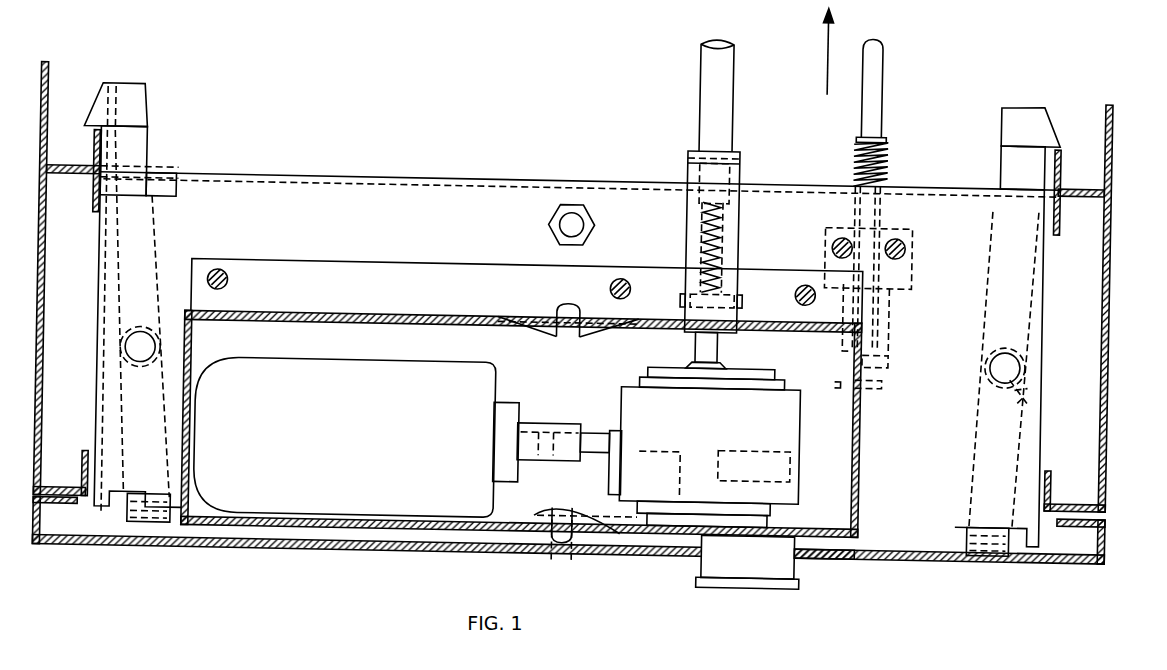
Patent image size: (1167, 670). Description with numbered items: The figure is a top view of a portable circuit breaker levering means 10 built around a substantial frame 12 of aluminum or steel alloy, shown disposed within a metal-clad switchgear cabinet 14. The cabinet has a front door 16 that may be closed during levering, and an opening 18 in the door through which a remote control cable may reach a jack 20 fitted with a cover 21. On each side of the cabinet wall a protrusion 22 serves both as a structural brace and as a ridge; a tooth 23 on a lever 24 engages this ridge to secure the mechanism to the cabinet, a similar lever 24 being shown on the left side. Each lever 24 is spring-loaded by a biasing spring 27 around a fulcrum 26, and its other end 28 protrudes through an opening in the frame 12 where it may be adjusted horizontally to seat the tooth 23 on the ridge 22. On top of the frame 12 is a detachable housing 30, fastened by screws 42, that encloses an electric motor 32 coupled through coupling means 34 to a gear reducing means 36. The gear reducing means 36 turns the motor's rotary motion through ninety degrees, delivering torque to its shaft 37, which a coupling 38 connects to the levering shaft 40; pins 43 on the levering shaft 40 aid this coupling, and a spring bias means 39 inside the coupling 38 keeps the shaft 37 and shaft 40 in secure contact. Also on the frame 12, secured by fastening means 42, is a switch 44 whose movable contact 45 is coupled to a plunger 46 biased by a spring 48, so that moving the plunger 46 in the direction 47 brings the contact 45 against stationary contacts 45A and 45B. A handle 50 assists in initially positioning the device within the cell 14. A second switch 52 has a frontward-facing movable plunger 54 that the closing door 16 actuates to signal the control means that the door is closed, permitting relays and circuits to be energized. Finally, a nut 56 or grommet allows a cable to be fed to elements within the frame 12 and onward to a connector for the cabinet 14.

The portable circuit breaker levering means 10 is at (606, 172).
The frame 12 is at (354, 179).
The metal-clad switchgear cabinet 14 is at (1109, 308).
The front door 16 is at (209, 553).
The opening 18 is at (809, 554).
The jack 20 is at (756, 538).
The cover 21 is at (795, 586).
The protrusion 22 is at (1057, 166).
The tooth 23 is at (1046, 141).
The lever 24 is at (143, 140).
The fulcrum 26 is at (1004, 344).
The biasing spring 27 is at (1027, 385).
The other end of lever 28 is at (999, 549).
The detachable housing 30 is at (466, 316).
The electric motor 32 is at (372, 365).
The coupling means 34 is at (578, 423).
The gear reducing means 36 is at (803, 441).
The shaft 37 is at (719, 248).
The coupling 38 is at (737, 218).
The spring bias means 39 is at (698, 254).
The levering shaft 40 is at (728, 84).
The screws 42 is at (226, 289).
The pins 43 is at (736, 163).
The switch 44 is at (887, 313).
The movable contact 45 is at (885, 380).
The stationary contact 45A is at (890, 362).
The stationary contact 45B is at (845, 361).
The plunger 46 is at (877, 50).
The direction 47 is at (822, 58).
The spring 48 is at (882, 160).
The handle 50 is at (562, 305).
The switch 52 is at (650, 470).
The movable plunger 54 is at (588, 556).
The nut 56 is at (548, 220).